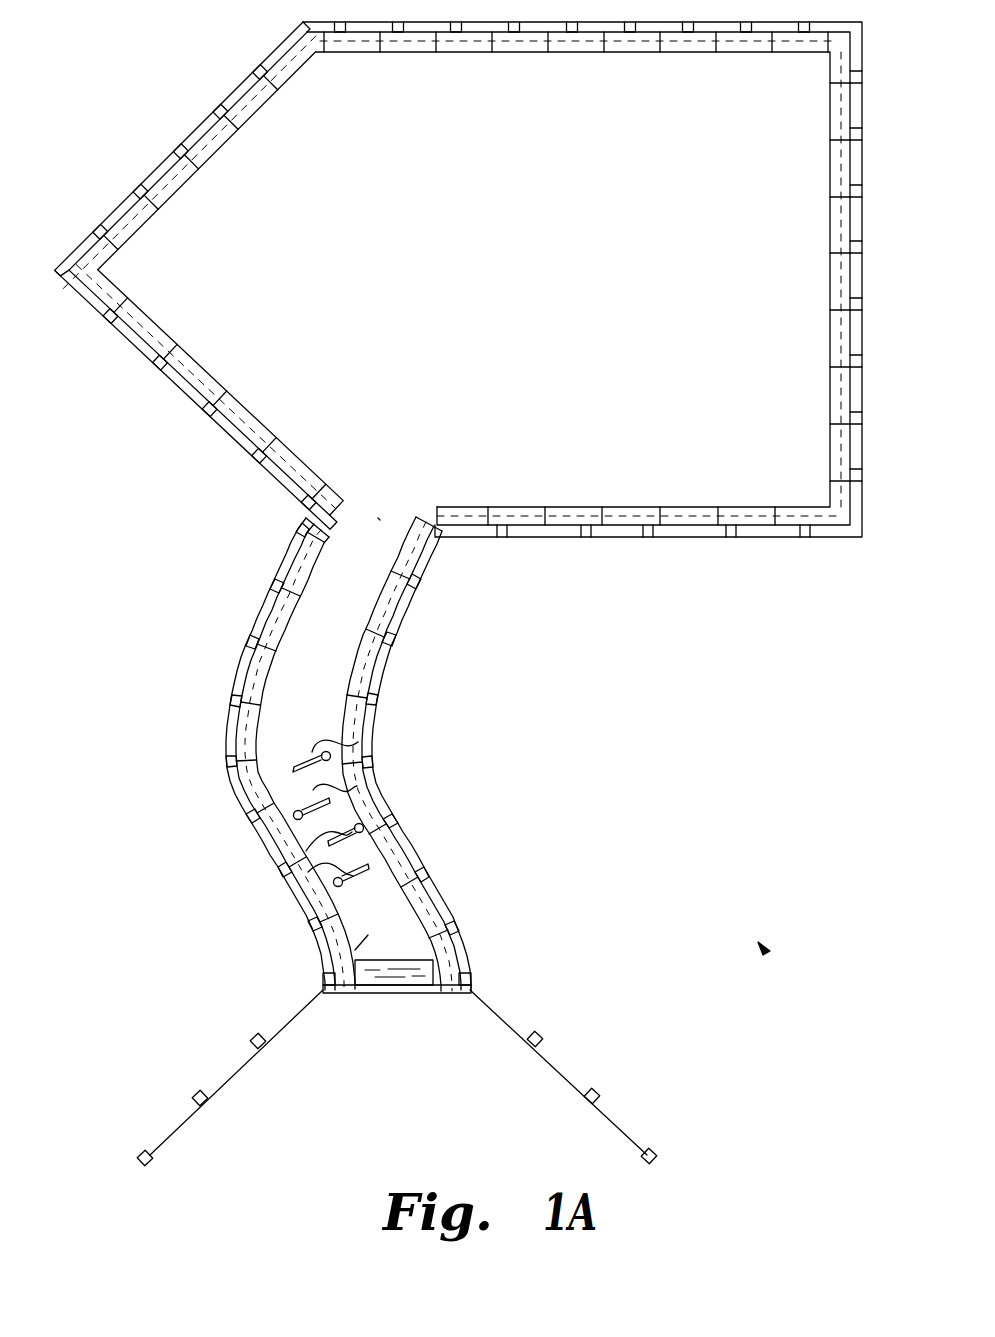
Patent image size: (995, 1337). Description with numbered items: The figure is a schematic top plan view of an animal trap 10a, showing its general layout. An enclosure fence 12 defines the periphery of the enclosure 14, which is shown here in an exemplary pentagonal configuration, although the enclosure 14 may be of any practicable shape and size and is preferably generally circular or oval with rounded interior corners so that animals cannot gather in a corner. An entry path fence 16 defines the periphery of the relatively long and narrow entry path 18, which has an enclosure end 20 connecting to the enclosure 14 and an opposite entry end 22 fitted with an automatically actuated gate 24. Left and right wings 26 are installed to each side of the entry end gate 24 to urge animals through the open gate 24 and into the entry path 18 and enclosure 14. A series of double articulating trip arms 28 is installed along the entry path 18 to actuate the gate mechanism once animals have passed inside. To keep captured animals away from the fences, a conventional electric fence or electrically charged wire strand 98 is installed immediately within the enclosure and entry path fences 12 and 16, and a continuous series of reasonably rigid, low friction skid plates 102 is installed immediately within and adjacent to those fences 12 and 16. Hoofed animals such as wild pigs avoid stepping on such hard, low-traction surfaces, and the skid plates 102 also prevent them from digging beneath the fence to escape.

The animal trap 10a is at (766, 953).
The enclosure fence 12 is at (185, 139).
The enclosure 14 is at (540, 262).
The entry path fence 16 is at (229, 693).
The entry path 18 is at (335, 659).
The enclosure end 20 is at (378, 518).
The entry end 22 is at (330, 947).
The automatically actuated gate 24 is at (393, 990).
The wings 26 is at (228, 1080).
The double articulating trip arms 28 is at (358, 785).
The electrically charged wire strand 98 is at (245, 103).
The skid plates 102 is at (148, 330).